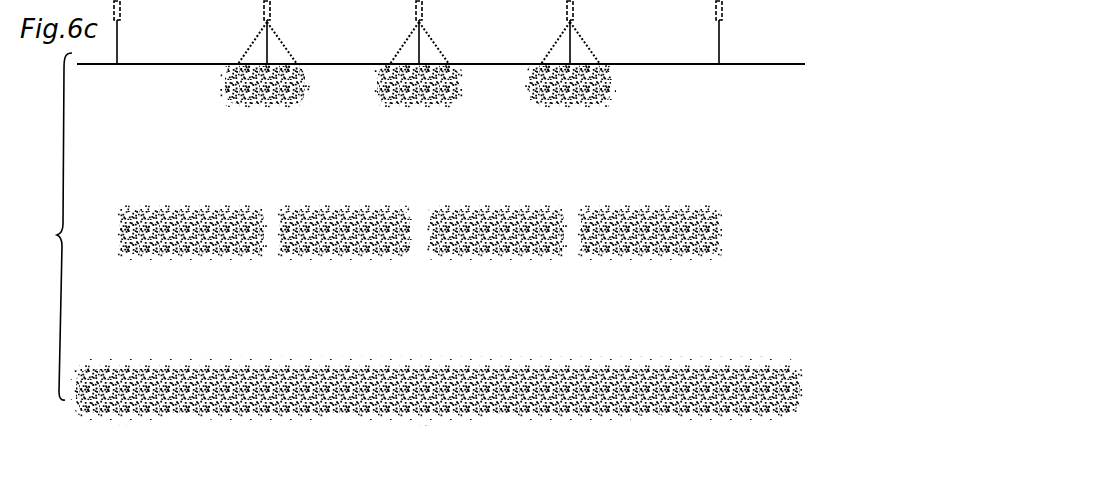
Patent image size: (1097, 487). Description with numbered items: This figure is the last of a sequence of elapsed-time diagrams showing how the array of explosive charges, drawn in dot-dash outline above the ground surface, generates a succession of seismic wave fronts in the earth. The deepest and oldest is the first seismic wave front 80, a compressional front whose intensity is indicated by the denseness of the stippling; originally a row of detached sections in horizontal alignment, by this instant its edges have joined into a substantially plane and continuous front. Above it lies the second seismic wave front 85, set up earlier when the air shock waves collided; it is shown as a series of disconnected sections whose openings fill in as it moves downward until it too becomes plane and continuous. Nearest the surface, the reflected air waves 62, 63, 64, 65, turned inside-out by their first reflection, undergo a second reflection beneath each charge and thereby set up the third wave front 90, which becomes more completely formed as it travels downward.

The reflected wave 62 is at (252, 44).
The reflected wave 63 is at (283, 45).
The reflected wave 64 is at (435, 45).
The reflected wave 65 is at (586, 45).
The seismic wave front 80 is at (152, 418).
The second seismic wave front 85 is at (172, 255).
The third wave front 90 is at (261, 105).